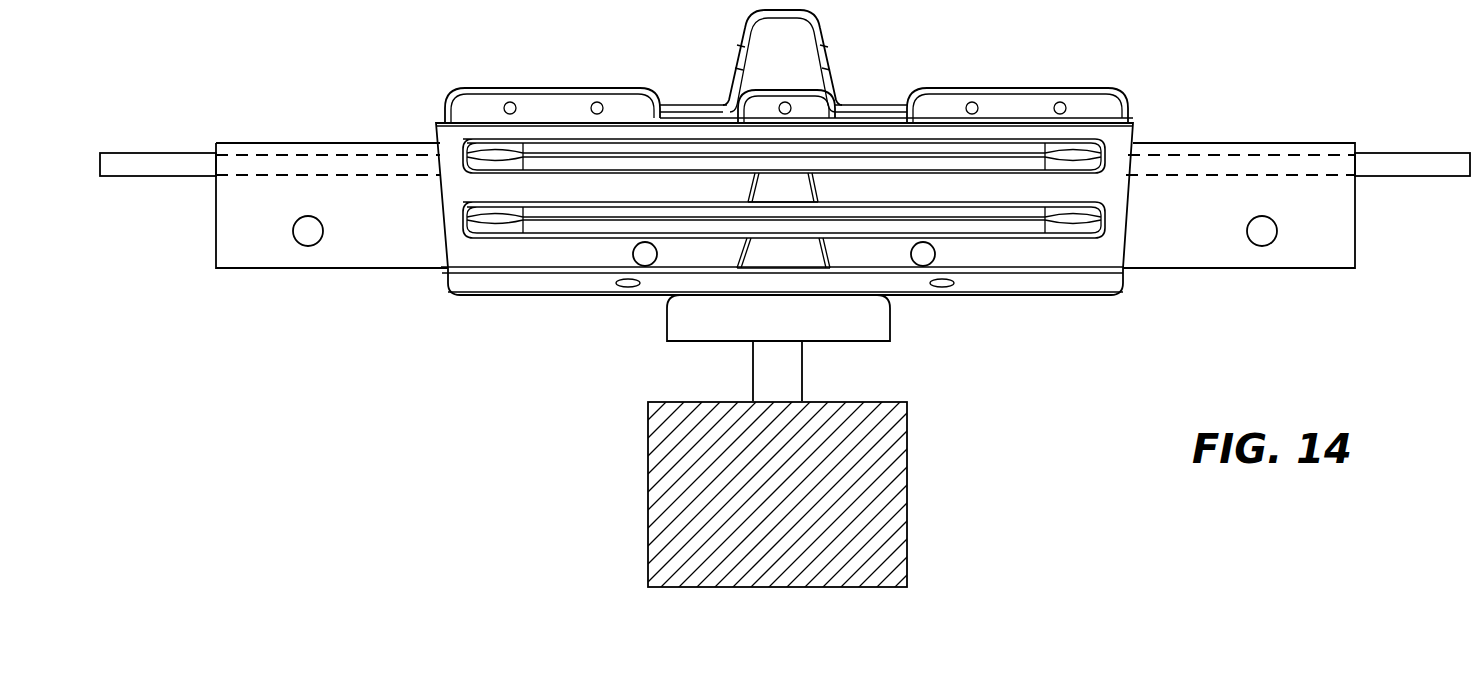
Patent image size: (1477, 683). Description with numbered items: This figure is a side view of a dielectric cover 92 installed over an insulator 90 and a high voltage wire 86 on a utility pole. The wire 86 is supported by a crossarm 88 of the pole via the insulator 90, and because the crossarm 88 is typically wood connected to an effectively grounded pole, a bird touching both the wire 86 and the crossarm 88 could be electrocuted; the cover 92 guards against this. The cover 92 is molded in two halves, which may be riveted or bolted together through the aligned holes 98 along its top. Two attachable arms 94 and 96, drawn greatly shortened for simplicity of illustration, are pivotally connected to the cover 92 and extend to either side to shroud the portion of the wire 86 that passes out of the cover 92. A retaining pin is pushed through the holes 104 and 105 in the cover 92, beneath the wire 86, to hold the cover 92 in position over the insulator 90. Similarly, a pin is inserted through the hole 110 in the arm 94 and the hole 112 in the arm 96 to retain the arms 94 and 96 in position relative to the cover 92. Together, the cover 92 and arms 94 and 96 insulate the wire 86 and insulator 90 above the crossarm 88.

The high voltage wire 86 is at (150, 160).
The crossarm 88 is at (648, 468).
The insulator 90 is at (705, 325).
The cover 92 is at (1035, 70).
The arm 94 is at (345, 143).
The arm 96 is at (1215, 143).
The aligned holes 98 is at (597, 108).
The hole 104 is at (645, 254).
The hole 105 is at (923, 254).
The hole 110 is at (308, 231).
The hole 112 is at (1262, 231).